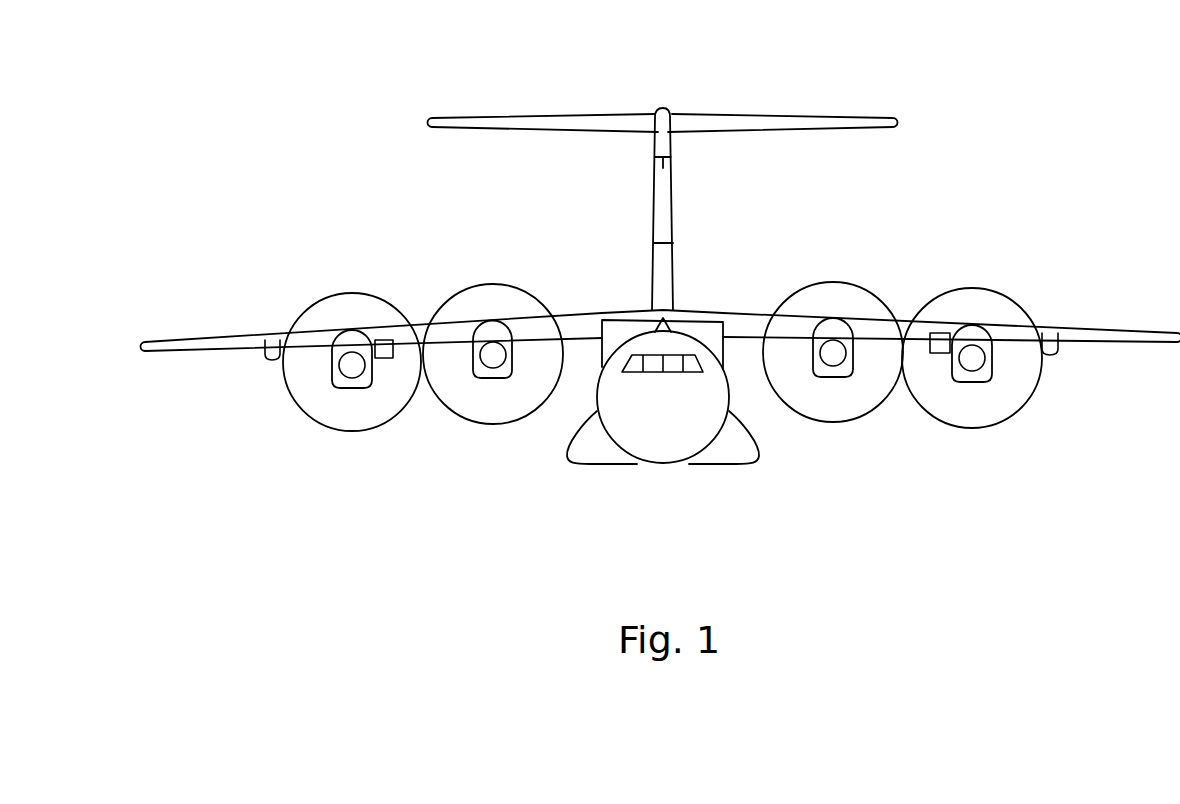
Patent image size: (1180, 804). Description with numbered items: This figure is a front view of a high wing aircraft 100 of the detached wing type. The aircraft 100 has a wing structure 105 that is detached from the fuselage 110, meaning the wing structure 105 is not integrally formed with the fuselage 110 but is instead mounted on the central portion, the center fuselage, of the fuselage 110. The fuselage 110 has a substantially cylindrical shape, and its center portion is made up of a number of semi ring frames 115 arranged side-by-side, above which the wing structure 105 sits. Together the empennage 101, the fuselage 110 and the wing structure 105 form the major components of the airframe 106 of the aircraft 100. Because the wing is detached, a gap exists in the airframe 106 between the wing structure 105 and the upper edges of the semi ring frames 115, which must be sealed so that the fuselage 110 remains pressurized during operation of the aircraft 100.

The high wing aircraft 100 is at (978, 203).
The empennage 101 is at (725, 112).
The wing structure 105 is at (747, 312).
The airframe 106 is at (472, 114).
The fuselage 110 is at (673, 428).
The semi ring frames 115 is at (651, 309).